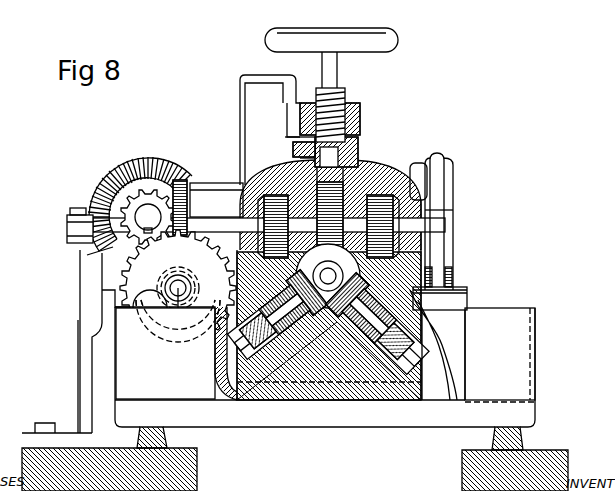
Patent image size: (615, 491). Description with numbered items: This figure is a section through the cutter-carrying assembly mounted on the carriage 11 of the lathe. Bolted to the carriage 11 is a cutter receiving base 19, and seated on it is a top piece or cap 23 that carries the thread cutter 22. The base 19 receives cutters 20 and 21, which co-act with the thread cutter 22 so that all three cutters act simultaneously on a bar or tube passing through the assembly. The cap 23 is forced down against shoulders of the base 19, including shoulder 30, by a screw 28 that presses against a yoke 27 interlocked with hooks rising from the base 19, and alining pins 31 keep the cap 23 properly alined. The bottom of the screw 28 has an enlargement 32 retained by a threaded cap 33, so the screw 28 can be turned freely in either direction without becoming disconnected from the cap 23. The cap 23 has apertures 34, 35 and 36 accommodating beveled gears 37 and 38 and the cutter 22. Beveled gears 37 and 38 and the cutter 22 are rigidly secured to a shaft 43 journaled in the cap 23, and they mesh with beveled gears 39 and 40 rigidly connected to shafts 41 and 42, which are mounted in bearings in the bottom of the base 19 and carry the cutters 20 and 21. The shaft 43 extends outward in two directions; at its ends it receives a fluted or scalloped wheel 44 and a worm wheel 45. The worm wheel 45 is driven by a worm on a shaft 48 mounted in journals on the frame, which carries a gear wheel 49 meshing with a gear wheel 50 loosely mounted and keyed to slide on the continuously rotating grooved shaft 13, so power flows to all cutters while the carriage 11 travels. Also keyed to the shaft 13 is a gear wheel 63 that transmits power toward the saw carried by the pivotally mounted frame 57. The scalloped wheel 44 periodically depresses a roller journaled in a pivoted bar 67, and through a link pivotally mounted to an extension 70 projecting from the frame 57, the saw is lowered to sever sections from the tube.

The carriage 11 is at (278, 370).
The shaft 13 is at (148, 217).
The cutter receiving base 19 is at (329, 326).
The cutter 20 is at (283, 320).
The cutter 21 is at (435, 345).
The thread cutter 22 is at (362, 172).
The top piece or cap 23 is at (330, 205).
The yoke 27 is at (358, 113).
The screw 28 is at (340, 95).
The shoulder 30 is at (336, 272).
The alining pins 31 is at (298, 268).
The enlargement 32 is at (350, 154).
The threaded cap 33 is at (300, 142).
The aperture 34 is at (244, 192).
The aperture 35 is at (302, 162).
The aperture 36 is at (384, 210).
The beveled gear 37 is at (264, 226).
The beveled gear 38 is at (380, 242).
The beveled gear 39 is at (250, 262).
The beveled gear 40 is at (443, 266).
The shaft 41 is at (276, 317).
The shaft 42 is at (360, 330).
The shaft 43 is at (412, 228).
The fluted or scalloped wheel 44 is at (437, 215).
The worm wheel 45 is at (140, 196).
The shaft 48 is at (176, 316).
The gear wheel 49 is at (170, 291).
The gear wheel 50 is at (85, 250).
The pivotally mounted frame 57 is at (207, 221).
The gear wheel 63 is at (112, 175).
The bar 67 is at (445, 320).
The extension 70 is at (446, 182).